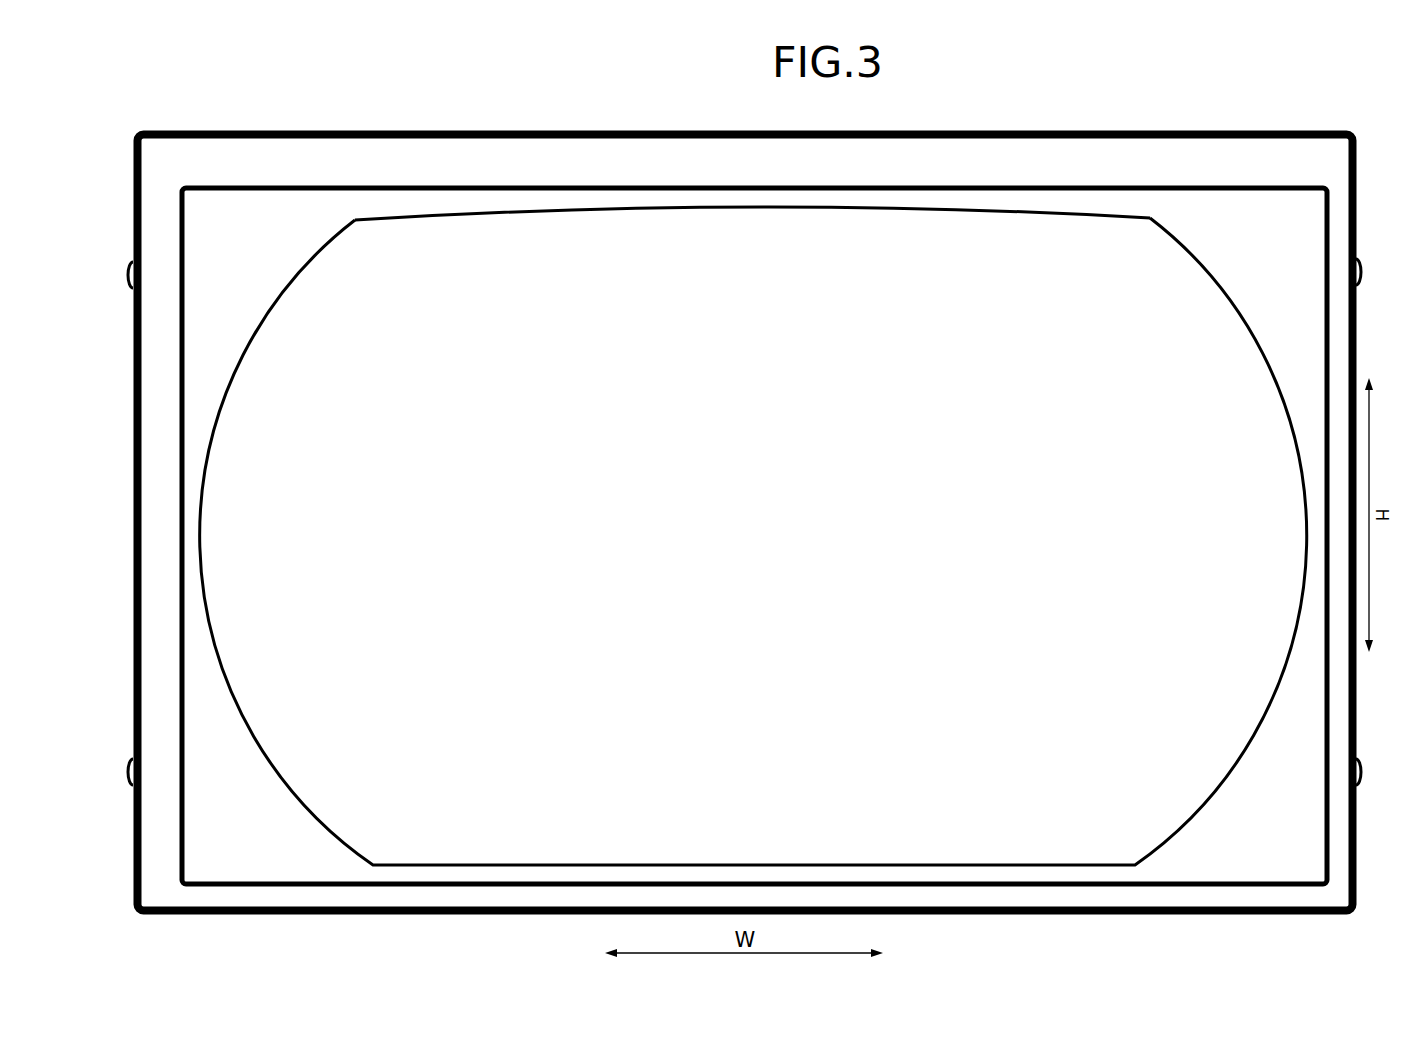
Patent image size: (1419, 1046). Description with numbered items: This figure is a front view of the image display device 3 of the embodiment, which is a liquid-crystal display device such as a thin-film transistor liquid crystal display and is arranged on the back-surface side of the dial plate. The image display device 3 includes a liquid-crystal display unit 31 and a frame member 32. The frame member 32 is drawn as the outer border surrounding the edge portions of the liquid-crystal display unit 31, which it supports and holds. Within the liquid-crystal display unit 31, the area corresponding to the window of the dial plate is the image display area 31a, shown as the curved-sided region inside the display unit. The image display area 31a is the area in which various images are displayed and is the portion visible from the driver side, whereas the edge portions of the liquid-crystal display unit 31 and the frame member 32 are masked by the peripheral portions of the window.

The image display device 3 is at (744, 480).
The liquid-crystal display unit 31 is at (754, 476).
The image display area 31a is at (1013, 210).
The frame member 32 is at (1124, 123).